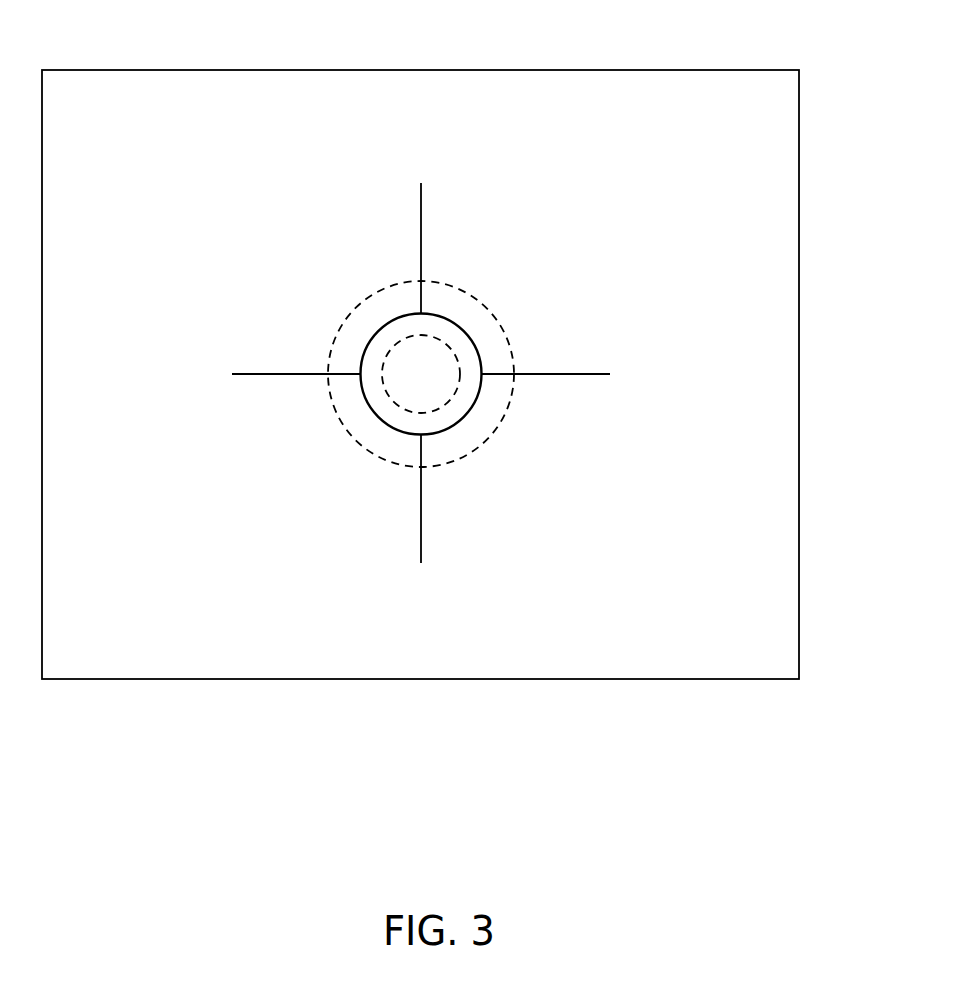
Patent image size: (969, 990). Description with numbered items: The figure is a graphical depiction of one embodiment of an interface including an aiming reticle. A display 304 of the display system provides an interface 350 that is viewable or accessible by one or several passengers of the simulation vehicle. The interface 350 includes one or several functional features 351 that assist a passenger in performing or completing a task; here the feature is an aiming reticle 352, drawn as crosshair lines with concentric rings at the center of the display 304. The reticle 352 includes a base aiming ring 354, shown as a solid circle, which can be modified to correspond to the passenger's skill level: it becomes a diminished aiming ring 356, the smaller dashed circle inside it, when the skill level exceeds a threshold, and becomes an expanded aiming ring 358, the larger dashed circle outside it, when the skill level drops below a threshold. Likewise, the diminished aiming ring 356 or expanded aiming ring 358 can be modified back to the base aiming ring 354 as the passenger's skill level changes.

The display 304 is at (569, 70).
The interface 350 is at (703, 490).
The functional feature 351 is at (281, 294).
The aiming reticle 352 is at (421, 212).
The base aiming ring 354 is at (453, 320).
The diminished aiming ring 356 is at (458, 378).
The expanded aiming ring 358 is at (507, 333).